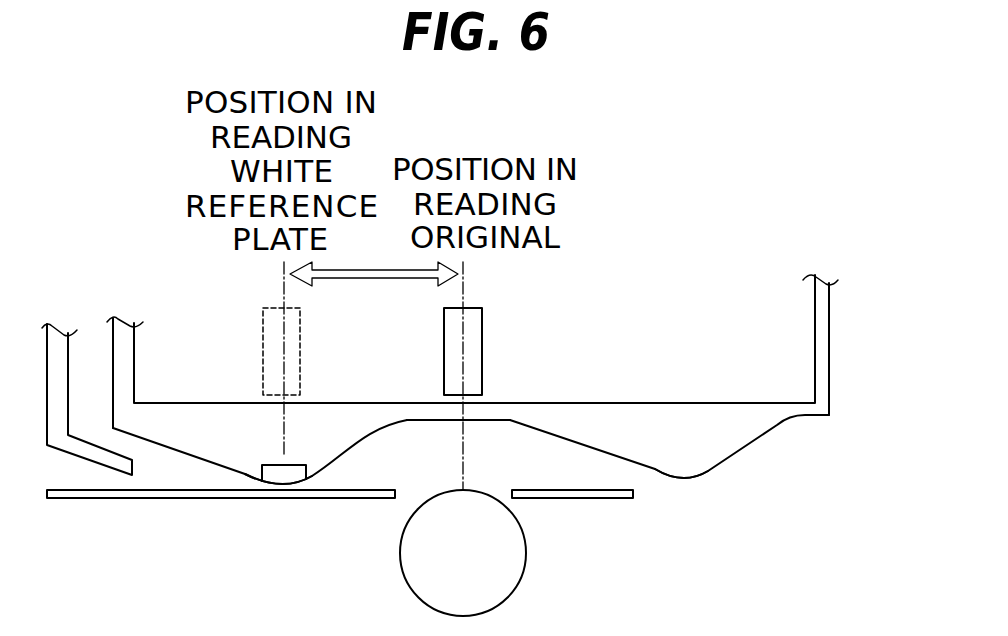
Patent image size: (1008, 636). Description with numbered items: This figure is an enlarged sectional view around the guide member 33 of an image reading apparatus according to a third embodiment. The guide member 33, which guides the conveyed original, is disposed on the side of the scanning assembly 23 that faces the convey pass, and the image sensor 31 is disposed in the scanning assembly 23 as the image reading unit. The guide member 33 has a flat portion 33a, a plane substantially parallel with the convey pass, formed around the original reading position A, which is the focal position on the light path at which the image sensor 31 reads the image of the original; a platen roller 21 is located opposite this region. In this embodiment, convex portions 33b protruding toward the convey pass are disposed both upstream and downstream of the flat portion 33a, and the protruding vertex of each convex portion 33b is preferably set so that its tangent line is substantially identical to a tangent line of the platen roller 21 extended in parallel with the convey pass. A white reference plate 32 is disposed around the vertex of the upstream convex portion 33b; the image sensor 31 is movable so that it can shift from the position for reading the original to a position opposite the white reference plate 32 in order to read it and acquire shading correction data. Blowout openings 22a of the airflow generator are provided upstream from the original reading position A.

The platen roller 21 is at (522, 573).
The blowout openings 22a is at (145, 452).
The scanning assembly 23 is at (829, 353).
The image sensor 31 is at (482, 360).
The white reference plate 32 is at (288, 488).
The guide member 33 is at (772, 410).
The flat portion 33a is at (428, 422).
The convex portion 33b is at (253, 465).
The original reading position A is at (463, 490).